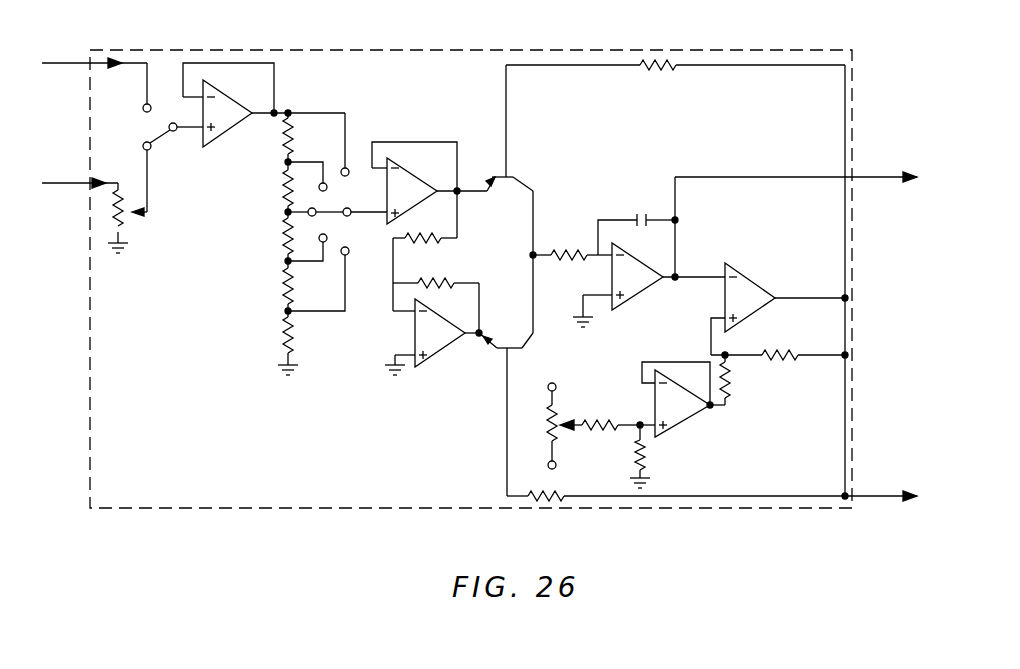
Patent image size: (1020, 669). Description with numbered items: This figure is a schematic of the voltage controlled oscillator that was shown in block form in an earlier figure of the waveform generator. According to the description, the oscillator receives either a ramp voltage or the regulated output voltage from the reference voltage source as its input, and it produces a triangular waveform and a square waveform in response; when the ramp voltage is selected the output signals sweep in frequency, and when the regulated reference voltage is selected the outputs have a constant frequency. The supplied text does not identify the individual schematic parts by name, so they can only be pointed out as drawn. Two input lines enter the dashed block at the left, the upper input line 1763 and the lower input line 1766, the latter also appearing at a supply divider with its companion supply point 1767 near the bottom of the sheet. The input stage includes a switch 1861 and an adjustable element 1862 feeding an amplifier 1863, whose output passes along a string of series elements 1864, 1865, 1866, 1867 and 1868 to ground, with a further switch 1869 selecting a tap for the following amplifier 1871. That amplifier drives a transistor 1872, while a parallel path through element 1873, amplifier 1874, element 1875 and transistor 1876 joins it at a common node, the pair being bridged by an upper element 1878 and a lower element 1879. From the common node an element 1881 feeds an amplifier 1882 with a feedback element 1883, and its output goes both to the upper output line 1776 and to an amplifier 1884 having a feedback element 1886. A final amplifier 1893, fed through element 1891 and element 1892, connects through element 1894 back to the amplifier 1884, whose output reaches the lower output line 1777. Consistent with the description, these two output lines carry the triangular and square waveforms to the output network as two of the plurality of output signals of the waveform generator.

The input signal line 1763 is at (68, 62).
The reference voltage input / potentiometer 1766 is at (64, 182).
The negative supply voltage 1767 is at (558, 466).
The output signal line 1776 is at (868, 181).
The output signal line 1777 is at (868, 500).
The switch 1861 is at (164, 134).
The potentiometer 1862 is at (128, 222).
The operational amplifier 1863 is at (252, 118).
The resistor 1864 is at (305, 137).
The resistor 1865 is at (285, 182).
The resistor 1866 is at (285, 230).
The resistor 1867 is at (285, 280).
The resistor 1868 is at (285, 330).
The switch 1869 is at (330, 209).
The operational amplifier 1871 is at (428, 173).
The transistor 1872 is at (516, 178).
The resistor 1873 is at (444, 242).
The operational amplifier 1874 is at (412, 330).
The resistor 1875 is at (424, 285).
The transistor 1876 is at (493, 351).
The resistor 1878 is at (652, 69).
The resistor 1879 is at (551, 500).
The resistor 1881 is at (576, 242).
The operational amplifier 1882 is at (641, 296).
The capacitor 1883 is at (636, 216).
The operational amplifier 1884 is at (758, 312).
The resistor 1886 is at (781, 361).
The resistor 1891 is at (647, 455).
The resistor 1892 is at (608, 431).
The operational amplifier 1893 is at (688, 420).
The resistor 1894 is at (730, 384).